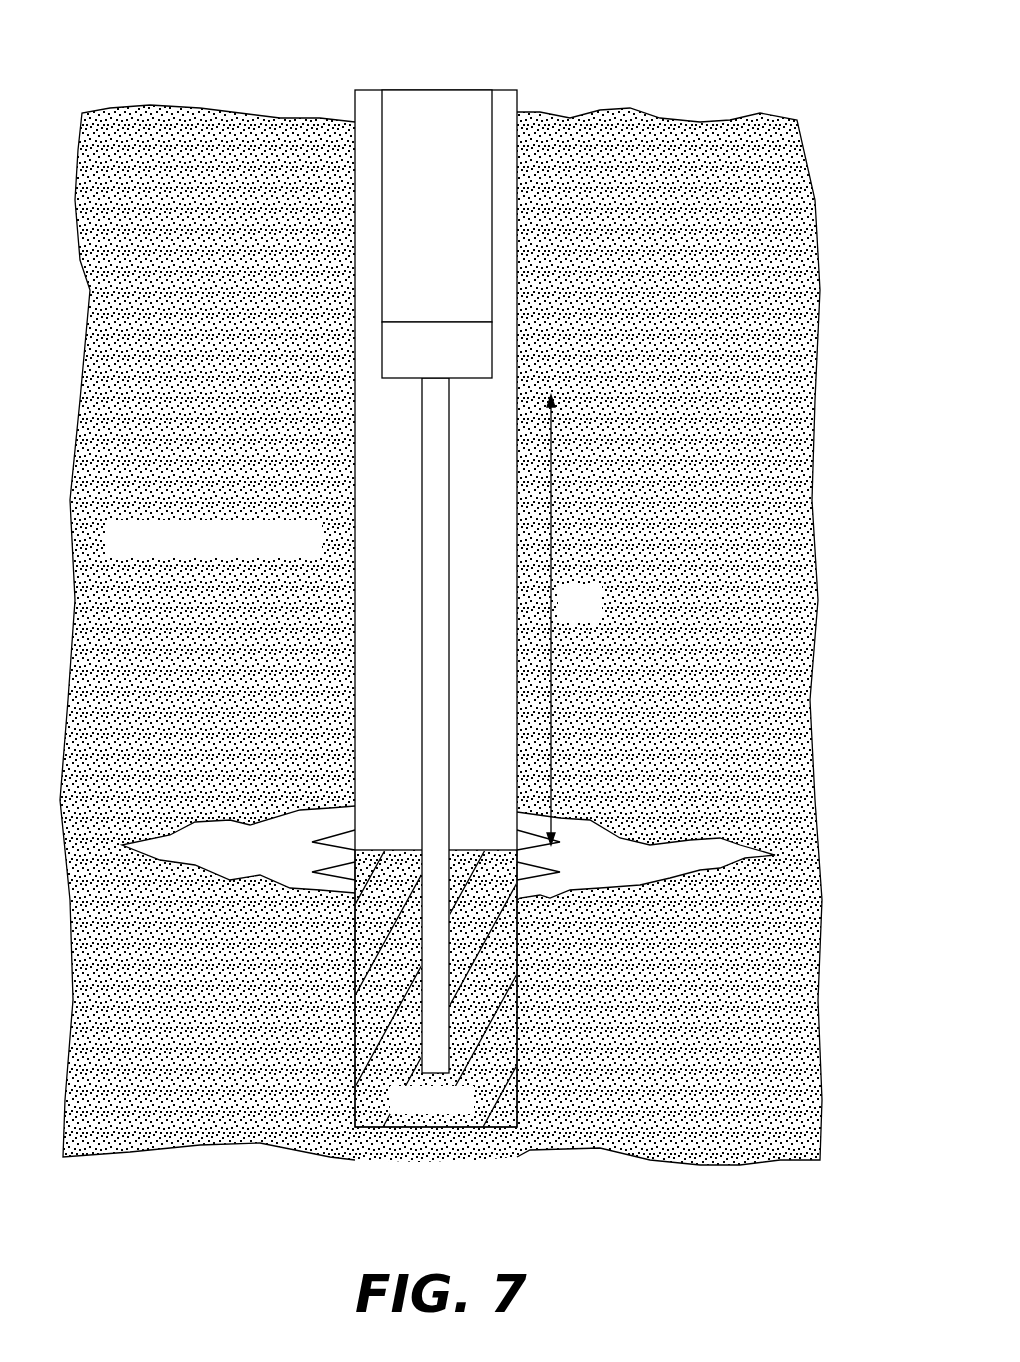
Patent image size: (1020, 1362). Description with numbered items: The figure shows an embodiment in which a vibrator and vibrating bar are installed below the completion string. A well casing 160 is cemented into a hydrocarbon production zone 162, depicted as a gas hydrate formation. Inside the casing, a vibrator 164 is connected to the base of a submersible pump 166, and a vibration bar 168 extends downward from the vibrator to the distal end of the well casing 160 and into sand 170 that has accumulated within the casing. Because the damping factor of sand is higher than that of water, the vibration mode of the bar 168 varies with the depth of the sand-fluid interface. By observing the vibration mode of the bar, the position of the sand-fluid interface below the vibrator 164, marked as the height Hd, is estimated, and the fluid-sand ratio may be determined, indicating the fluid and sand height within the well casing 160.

The well casing 160 is at (493, 90).
The hydrocarbon production zone 162 is at (692, 483).
The vibrator 164 is at (492, 358).
The submersible pump 166 is at (398, 90).
The vibration bar 168 is at (422, 633).
The sand 170 is at (517, 1127).